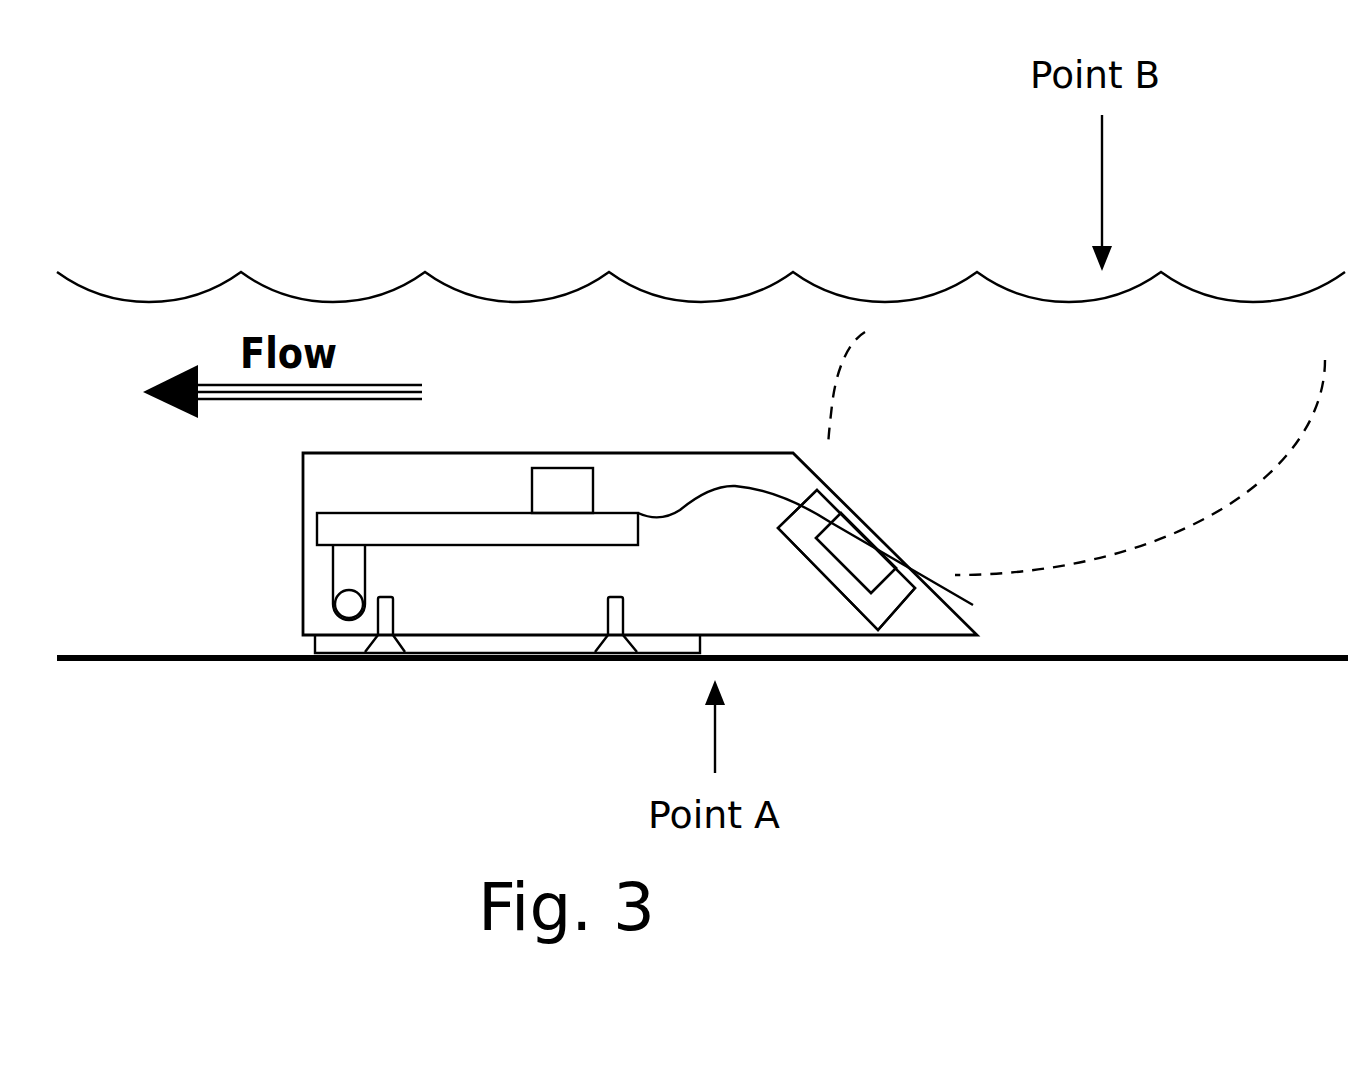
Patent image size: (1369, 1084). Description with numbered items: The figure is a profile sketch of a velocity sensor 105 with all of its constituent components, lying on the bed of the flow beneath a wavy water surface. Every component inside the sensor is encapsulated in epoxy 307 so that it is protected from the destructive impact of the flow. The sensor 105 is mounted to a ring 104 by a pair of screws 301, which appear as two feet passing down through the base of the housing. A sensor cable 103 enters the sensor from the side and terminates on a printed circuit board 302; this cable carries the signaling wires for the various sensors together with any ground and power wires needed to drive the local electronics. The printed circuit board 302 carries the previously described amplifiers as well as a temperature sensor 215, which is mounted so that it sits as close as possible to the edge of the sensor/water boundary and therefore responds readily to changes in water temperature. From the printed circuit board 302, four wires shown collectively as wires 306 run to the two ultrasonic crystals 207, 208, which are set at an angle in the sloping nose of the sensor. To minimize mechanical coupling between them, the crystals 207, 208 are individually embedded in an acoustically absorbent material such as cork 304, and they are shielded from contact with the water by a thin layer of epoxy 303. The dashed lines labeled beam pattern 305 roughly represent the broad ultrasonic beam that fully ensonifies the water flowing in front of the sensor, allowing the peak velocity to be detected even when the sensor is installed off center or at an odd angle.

The sensor cable 103 is at (338, 580).
The ring 104 is at (315, 653).
The velocity sensor 105 is at (300, 505).
The temperature sensor 215 is at (565, 490).
The screws 301 is at (613, 661).
The printed circuit board 302 is at (402, 528).
The epoxy 303 is at (878, 496).
The cork 304 is at (887, 597).
The beam pattern 305 is at (1253, 487).
The wires 306 is at (730, 485).
The epoxy 307 is at (720, 607).
The ultrasonic crystal 207 is at (857, 558).
The ultrasonic crystal 208 is at (985, 603).